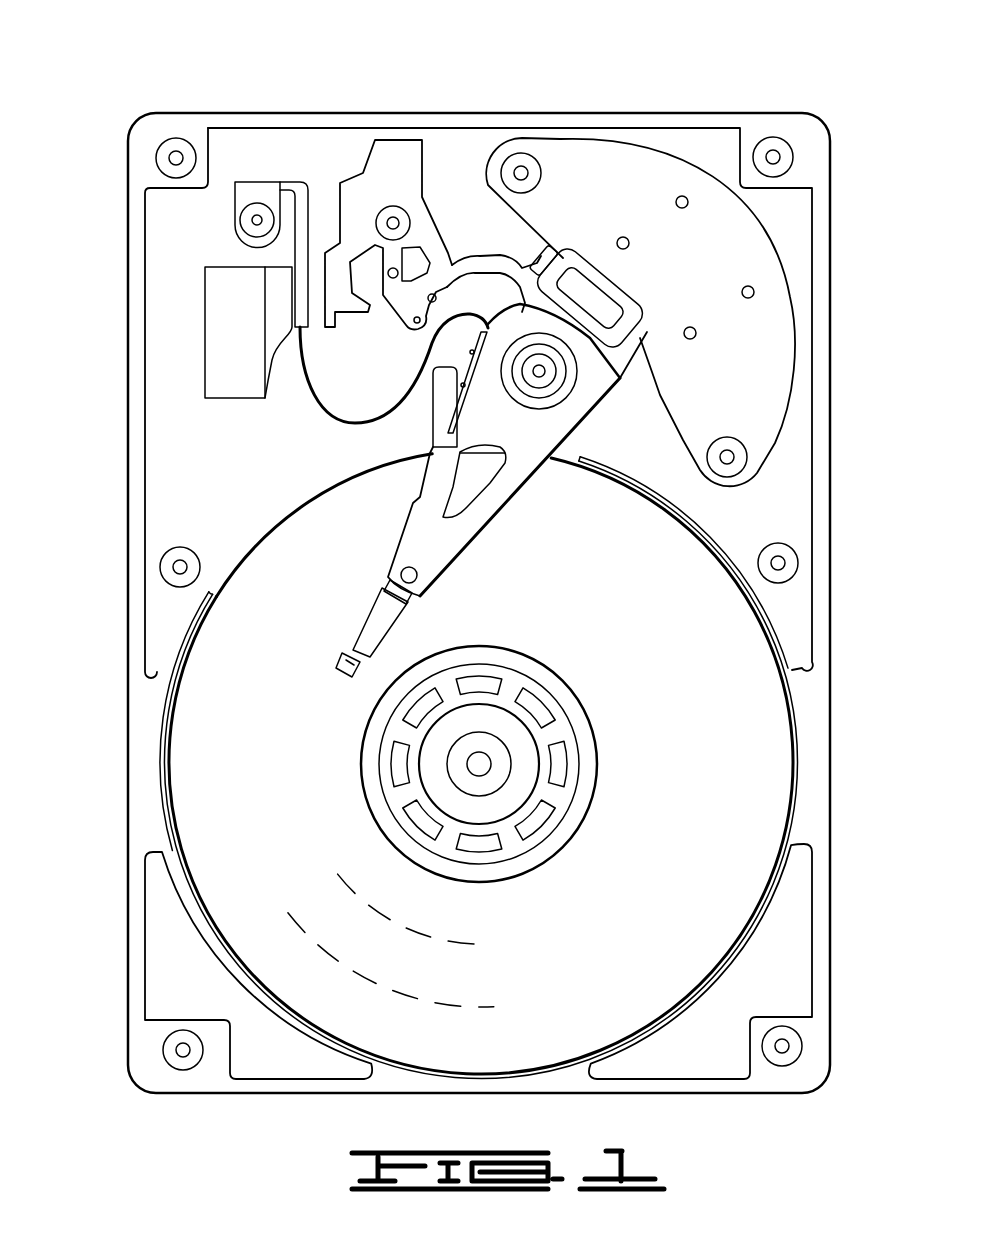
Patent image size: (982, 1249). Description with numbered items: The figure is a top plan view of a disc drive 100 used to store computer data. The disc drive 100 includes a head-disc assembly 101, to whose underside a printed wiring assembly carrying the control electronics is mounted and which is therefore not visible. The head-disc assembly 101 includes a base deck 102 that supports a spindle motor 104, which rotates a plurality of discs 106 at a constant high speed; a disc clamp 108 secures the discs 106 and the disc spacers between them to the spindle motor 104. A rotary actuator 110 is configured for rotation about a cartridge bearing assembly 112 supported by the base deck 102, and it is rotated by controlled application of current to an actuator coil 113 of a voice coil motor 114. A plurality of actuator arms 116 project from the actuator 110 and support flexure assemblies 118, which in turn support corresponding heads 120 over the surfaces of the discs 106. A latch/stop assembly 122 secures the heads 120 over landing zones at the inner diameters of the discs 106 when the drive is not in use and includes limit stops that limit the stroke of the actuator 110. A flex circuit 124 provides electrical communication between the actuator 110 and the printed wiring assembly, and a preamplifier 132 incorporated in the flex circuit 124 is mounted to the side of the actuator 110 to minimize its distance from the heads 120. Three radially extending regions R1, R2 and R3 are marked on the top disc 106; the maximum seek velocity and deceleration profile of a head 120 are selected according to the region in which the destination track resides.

The disc drive 100 is at (236, 86).
The head-disc assembly 101 is at (150, 156).
The base deck 102 is at (227, 468).
The spindle motor 104 is at (465, 796).
The discs 106 is at (720, 848).
The disc clamp 108 is at (378, 808).
The rotary actuator 110 is at (476, 456).
The cartridge bearing assembly 112 is at (548, 387).
The actuator coil 113 is at (632, 330).
The voice coil motor 114 is at (575, 205).
The actuator arms 116 is at (415, 553).
The flexure assemblies 118 is at (370, 632).
The heads 120 is at (338, 667).
The latch/stop assembly 122 is at (395, 158).
The flex circuit 124 is at (335, 428).
The preamplifier 132 is at (428, 424).
The first radially extending region R1 is at (414, 909).
The second radially extending region R2 is at (394, 962).
The third radially extending region R3 is at (391, 973).